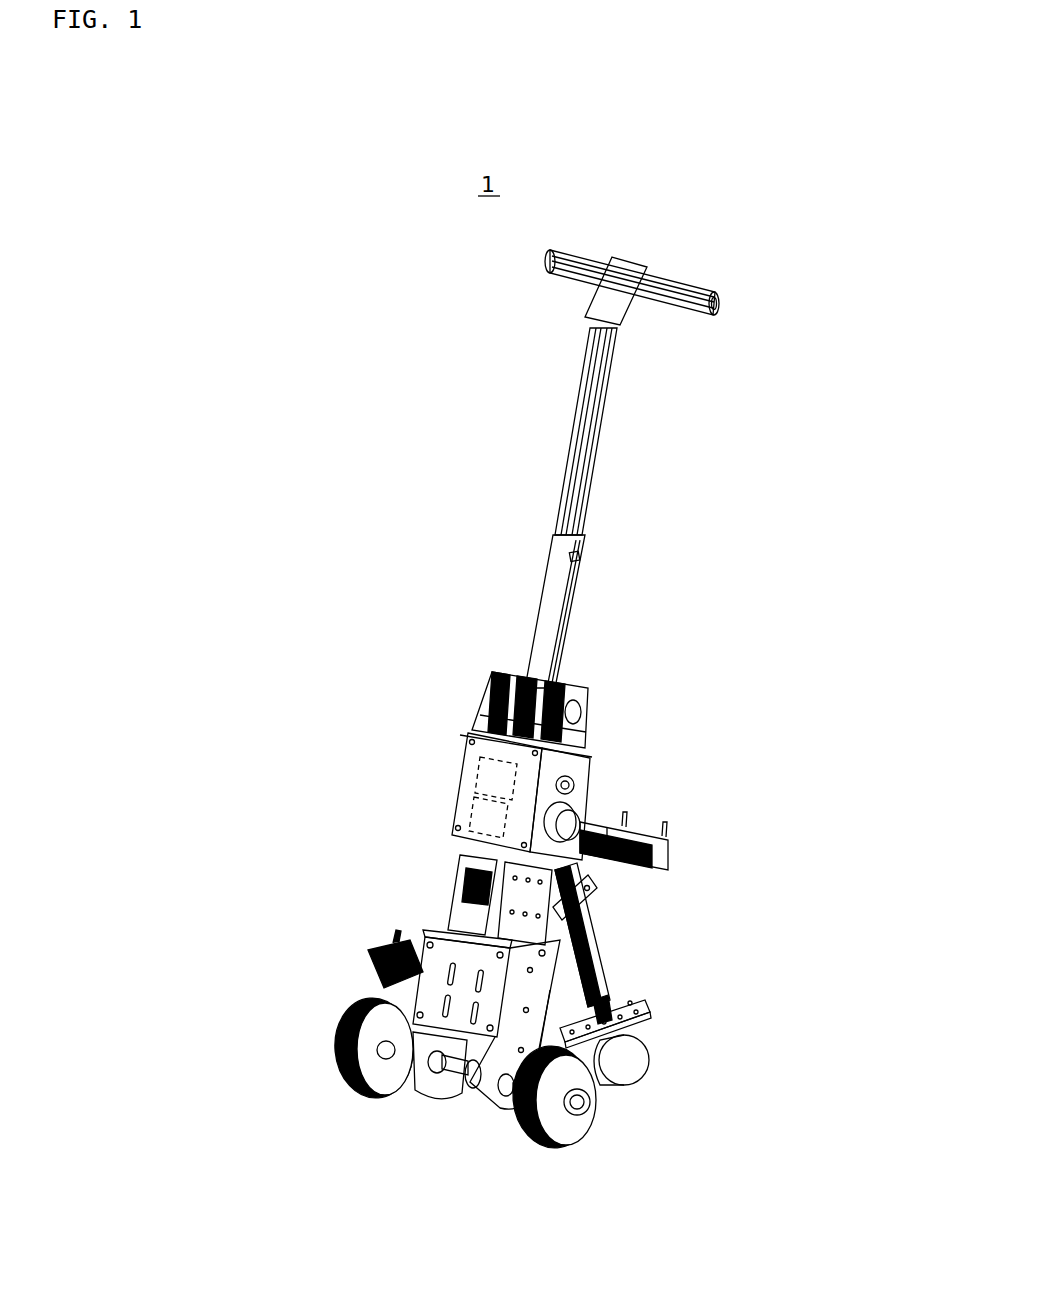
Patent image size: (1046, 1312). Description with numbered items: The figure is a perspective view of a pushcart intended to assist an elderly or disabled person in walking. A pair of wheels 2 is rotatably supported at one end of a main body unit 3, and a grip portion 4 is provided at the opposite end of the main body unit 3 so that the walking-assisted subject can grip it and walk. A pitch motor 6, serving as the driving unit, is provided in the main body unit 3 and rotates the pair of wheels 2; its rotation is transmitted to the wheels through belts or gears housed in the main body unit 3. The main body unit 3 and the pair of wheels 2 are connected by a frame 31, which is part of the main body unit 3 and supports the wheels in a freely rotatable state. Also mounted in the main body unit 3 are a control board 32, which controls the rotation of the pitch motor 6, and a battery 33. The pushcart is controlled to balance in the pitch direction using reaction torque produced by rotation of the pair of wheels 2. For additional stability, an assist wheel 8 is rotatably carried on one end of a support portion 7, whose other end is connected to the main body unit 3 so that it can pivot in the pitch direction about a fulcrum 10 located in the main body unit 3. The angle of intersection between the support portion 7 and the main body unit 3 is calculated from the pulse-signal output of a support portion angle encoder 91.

The pair of wheels 2 is at (360, 1057).
The main body unit 3 is at (425, 710).
The grip portion 4 is at (682, 287).
The pitch motor 6 is at (385, 960).
The support portion 7 is at (597, 980).
The assist wheel 8 is at (637, 1058).
The fulcrum 10 is at (570, 778).
The frame 31 is at (545, 953).
The control board 32 is at (468, 763).
The battery 33 is at (460, 803).
The support portion angle encoder 91 is at (633, 853).